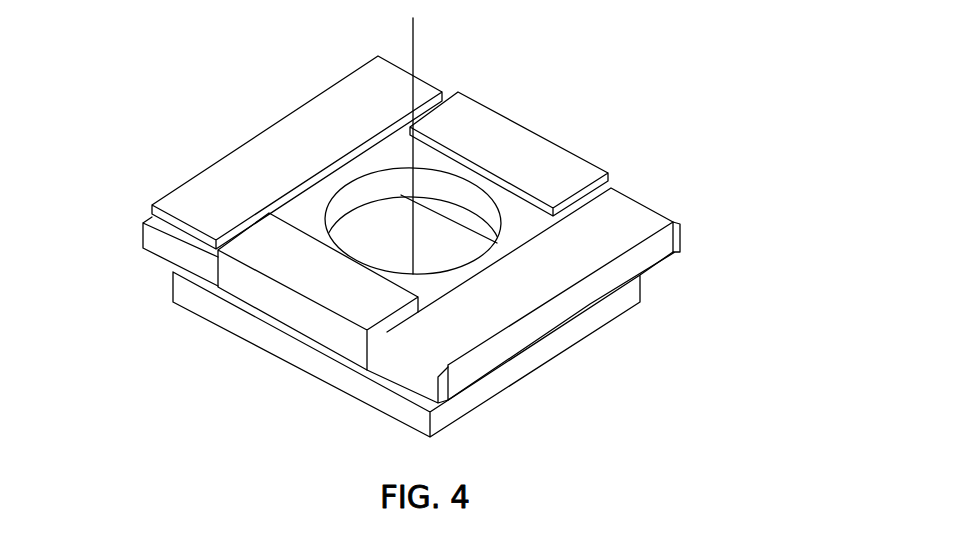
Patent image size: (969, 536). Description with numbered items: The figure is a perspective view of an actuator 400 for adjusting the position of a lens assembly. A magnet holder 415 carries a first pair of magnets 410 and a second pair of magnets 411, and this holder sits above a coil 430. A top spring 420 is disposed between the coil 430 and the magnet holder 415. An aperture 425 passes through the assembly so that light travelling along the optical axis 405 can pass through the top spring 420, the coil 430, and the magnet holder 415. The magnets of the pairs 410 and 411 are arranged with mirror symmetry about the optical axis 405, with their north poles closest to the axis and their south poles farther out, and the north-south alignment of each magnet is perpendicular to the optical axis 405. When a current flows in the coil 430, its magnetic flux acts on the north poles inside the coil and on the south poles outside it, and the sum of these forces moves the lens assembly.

The actuator 400 is at (821, 70).
The optical axis 405 is at (413, 60).
The first pair of magnets 410 is at (548, 138).
The second pair of magnets 411 is at (230, 150).
The magnet holder 415 is at (683, 233).
The top spring 420 is at (383, 378).
The aperture 425 is at (401, 244).
The coil 430 is at (497, 395).